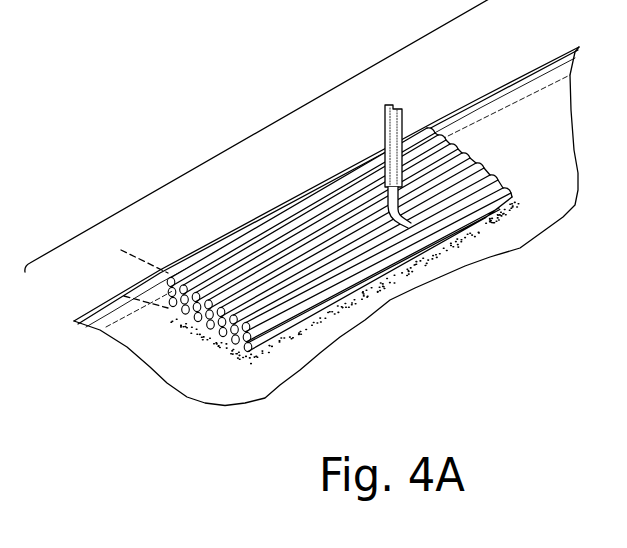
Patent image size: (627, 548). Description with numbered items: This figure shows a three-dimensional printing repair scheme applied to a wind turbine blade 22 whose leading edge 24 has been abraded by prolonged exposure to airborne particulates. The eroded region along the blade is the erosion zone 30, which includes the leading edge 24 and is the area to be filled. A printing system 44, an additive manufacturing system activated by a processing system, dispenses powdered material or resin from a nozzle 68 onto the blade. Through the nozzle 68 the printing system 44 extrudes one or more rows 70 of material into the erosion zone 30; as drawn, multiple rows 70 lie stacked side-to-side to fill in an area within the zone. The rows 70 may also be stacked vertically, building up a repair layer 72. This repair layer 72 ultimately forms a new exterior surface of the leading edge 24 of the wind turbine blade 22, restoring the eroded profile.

The wind turbine blade 22 is at (197, 256).
The leading edge 24 is at (516, 166).
The erosion zone 30 is at (318, 98).
The printing system 44 is at (405, 116).
The nozzle 68 is at (393, 127).
The rows 70 is at (366, 280).
The repair layer 72 is at (121, 250).